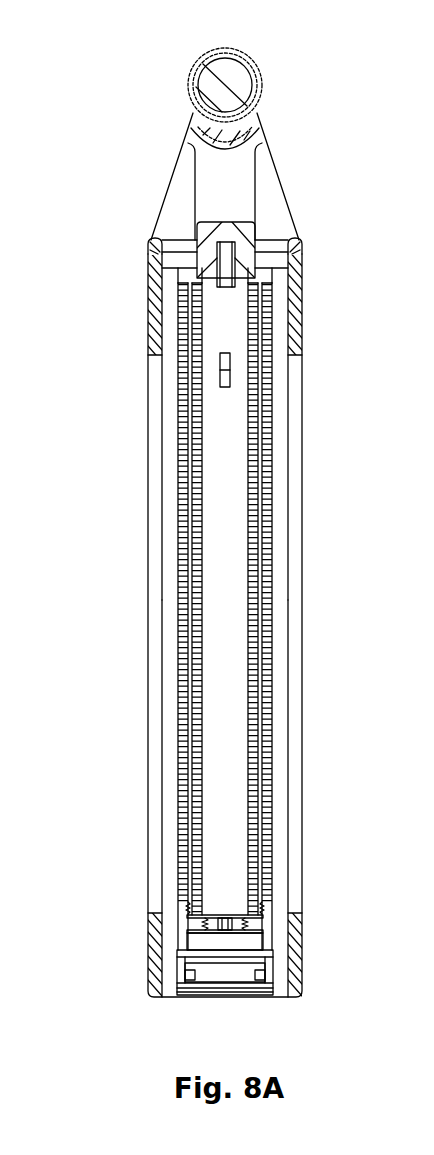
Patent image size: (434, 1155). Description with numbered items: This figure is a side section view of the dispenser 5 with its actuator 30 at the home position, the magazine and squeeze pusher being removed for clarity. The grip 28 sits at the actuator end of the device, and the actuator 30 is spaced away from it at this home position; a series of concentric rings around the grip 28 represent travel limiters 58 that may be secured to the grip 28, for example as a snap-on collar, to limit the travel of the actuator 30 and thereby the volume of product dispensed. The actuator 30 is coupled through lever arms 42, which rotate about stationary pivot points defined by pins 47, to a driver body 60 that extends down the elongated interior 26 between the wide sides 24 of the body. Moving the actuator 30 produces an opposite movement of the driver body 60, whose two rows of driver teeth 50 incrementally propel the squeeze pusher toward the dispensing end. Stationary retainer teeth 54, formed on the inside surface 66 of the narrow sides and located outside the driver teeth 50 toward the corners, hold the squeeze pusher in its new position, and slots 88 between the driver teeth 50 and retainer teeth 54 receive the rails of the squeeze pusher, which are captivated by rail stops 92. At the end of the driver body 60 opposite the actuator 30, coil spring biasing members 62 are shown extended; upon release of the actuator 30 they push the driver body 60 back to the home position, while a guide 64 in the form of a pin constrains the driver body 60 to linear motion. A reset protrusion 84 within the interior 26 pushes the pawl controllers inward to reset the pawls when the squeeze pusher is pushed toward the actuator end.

The dispenser 5 is at (97, 63).
The wide side 24 is at (160, 300).
The interior 26 is at (170, 769).
The grip 28 is at (226, 76).
The actuator 30 is at (254, 129).
The lever arm 42 is at (226, 256).
The pin 47 is at (270, 264).
The driver teeth 50 is at (202, 433).
The retainer teeth 54 is at (265, 491).
The travel limiter 58 is at (186, 78).
The driver body 60 is at (225, 614).
The biasing member 62 is at (190, 928).
The guide 64 is at (227, 921).
The inside surface 66 is at (172, 388).
The reset protrusion 84 is at (226, 366).
The slot 88 is at (262, 571).
The rail stop 92 is at (190, 906).